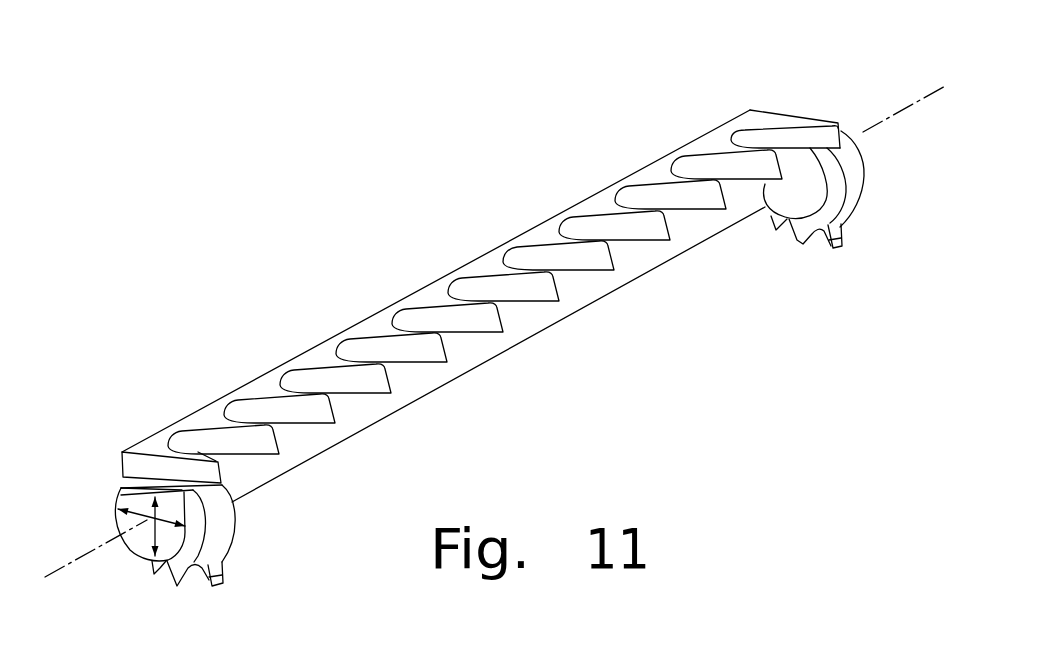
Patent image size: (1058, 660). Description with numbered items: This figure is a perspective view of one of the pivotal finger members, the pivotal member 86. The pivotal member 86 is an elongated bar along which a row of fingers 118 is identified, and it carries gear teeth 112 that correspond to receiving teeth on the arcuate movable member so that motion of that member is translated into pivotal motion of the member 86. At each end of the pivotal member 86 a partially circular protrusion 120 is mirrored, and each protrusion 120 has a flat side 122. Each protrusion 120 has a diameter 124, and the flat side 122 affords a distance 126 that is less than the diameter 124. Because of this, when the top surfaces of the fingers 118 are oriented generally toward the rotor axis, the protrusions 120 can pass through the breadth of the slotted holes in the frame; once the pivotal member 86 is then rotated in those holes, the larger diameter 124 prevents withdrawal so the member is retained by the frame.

The pivotal member 86 is at (481, 306).
The fingers 118 is at (505, 326).
The partially circular protrusion 120 is at (502, 359).
The gear teeth 112 is at (210, 576).
The flat side 122 is at (128, 487).
The diameter 124 is at (118, 511).
The distance 126 is at (163, 537).